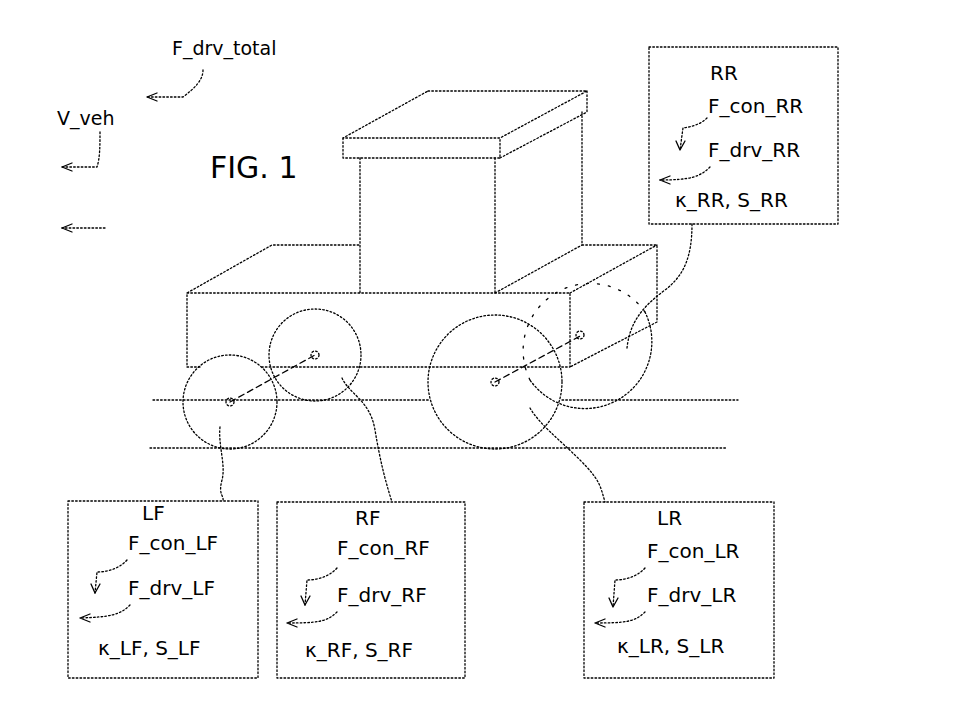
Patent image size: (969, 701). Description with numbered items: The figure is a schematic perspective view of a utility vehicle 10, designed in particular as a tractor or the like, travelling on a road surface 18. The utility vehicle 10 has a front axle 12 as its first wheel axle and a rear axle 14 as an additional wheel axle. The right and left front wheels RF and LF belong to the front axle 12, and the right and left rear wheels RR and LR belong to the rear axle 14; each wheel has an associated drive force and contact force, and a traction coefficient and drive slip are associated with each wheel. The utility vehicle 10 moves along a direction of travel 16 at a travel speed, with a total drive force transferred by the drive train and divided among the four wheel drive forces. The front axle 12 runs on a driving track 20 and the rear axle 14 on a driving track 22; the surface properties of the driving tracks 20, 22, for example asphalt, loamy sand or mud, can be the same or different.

The utility vehicle 10 is at (567, 55).
The front axle 12 is at (255, 388).
The rear axle 14 is at (517, 370).
The direction of travel 16 is at (93, 228).
The road surface 18 is at (167, 430).
The driving track of the front axle 20 is at (313, 403).
The driving track of the rear axle 22 is at (580, 402).